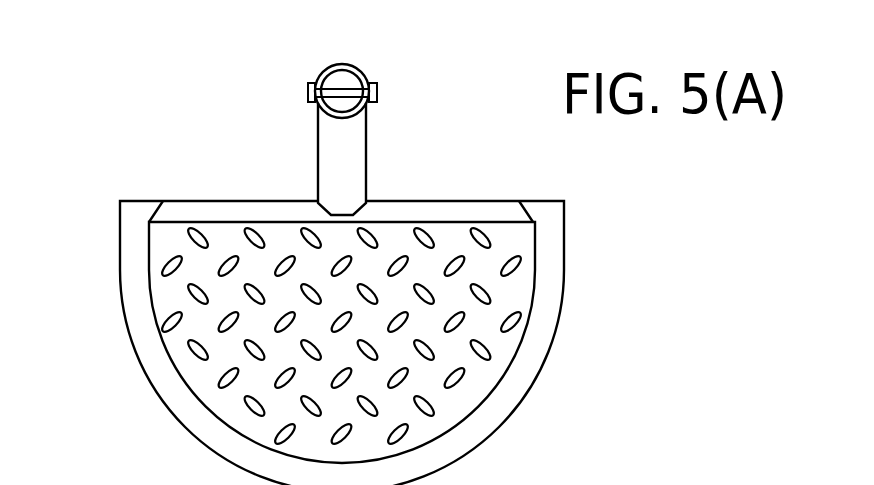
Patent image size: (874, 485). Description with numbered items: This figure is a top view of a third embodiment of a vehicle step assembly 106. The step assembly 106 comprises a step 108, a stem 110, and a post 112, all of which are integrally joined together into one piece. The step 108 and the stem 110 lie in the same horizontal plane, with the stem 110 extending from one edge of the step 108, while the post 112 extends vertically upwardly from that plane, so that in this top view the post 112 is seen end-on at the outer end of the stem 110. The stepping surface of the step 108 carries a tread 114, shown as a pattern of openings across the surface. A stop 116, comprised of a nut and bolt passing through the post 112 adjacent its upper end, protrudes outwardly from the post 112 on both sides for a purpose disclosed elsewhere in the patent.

The step assembly 106 is at (623, 262).
The step 108 is at (503, 395).
The stem 110 is at (333, 159).
The post 112 is at (362, 107).
The tread 114 is at (478, 316).
The stop 116 is at (308, 90).